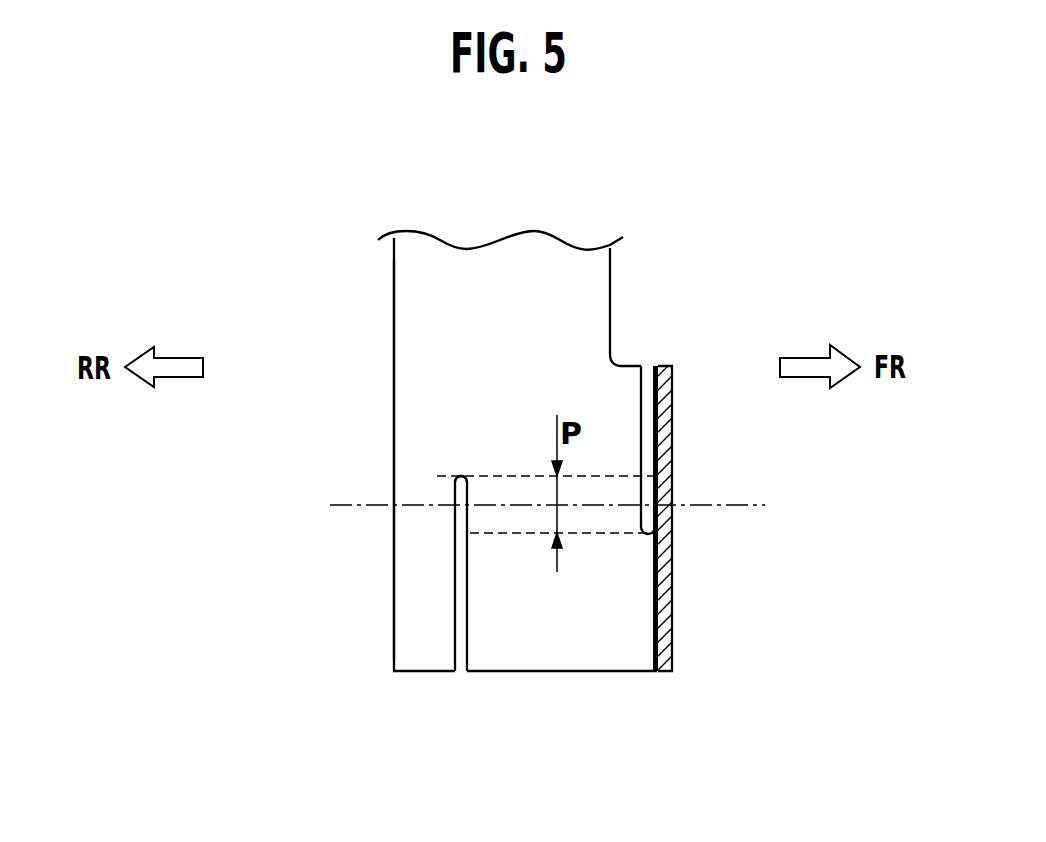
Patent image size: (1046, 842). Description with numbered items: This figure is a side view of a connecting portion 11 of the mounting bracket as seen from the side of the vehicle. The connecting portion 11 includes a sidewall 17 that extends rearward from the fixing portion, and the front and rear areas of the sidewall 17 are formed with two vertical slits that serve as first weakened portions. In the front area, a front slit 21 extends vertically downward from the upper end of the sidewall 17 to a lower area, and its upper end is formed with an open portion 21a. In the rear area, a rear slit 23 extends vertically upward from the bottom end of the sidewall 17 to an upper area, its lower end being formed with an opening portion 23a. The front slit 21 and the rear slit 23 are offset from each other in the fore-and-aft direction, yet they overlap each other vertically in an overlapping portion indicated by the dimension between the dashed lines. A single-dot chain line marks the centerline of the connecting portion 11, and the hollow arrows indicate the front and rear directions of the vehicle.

The connecting portion 11 is at (356, 364).
The sidewall 17 is at (500, 408).
The front slit 21 is at (653, 458).
The open portion 21a is at (648, 377).
The rear slit 23 is at (456, 585).
The opening portion 23a is at (462, 645).